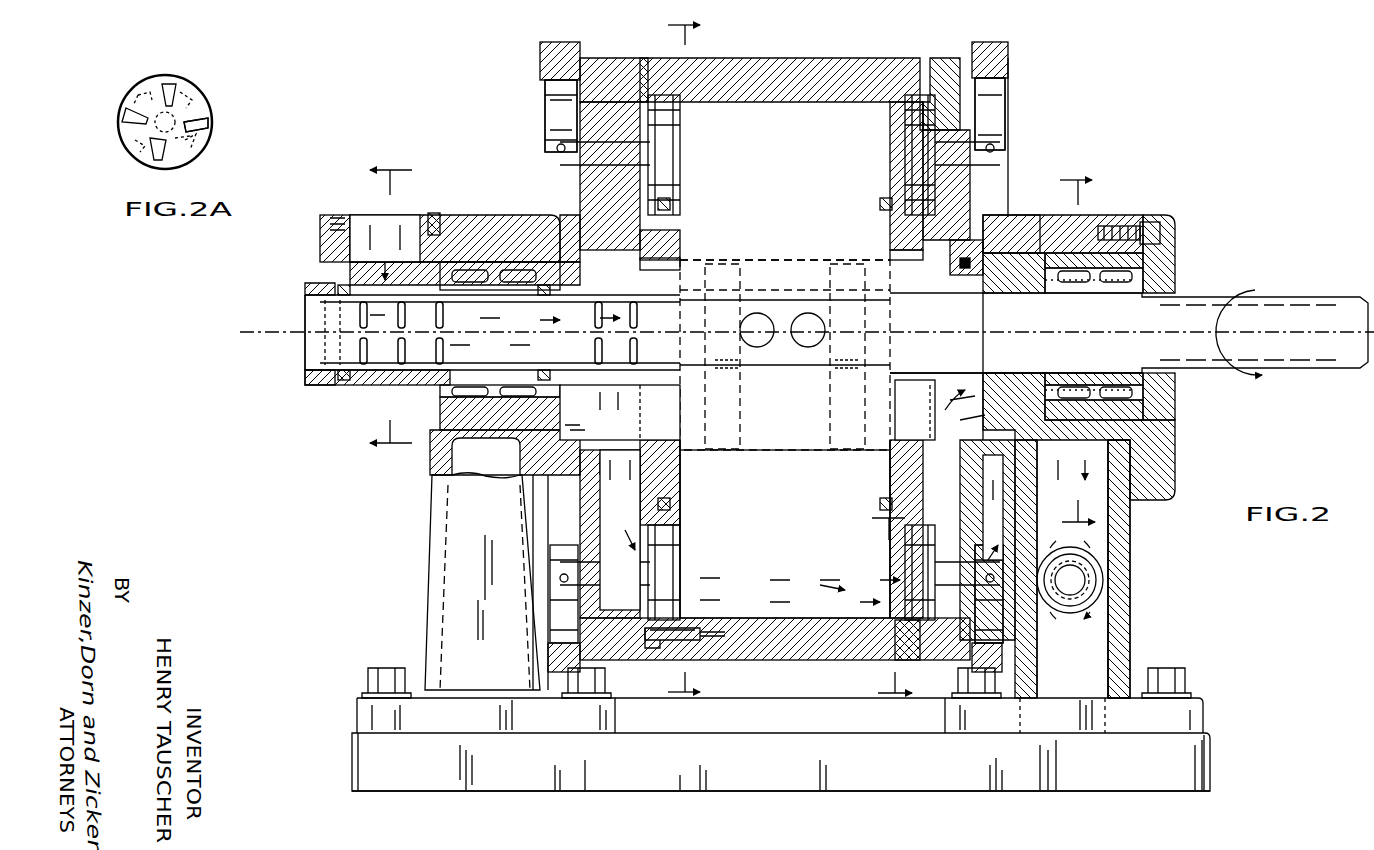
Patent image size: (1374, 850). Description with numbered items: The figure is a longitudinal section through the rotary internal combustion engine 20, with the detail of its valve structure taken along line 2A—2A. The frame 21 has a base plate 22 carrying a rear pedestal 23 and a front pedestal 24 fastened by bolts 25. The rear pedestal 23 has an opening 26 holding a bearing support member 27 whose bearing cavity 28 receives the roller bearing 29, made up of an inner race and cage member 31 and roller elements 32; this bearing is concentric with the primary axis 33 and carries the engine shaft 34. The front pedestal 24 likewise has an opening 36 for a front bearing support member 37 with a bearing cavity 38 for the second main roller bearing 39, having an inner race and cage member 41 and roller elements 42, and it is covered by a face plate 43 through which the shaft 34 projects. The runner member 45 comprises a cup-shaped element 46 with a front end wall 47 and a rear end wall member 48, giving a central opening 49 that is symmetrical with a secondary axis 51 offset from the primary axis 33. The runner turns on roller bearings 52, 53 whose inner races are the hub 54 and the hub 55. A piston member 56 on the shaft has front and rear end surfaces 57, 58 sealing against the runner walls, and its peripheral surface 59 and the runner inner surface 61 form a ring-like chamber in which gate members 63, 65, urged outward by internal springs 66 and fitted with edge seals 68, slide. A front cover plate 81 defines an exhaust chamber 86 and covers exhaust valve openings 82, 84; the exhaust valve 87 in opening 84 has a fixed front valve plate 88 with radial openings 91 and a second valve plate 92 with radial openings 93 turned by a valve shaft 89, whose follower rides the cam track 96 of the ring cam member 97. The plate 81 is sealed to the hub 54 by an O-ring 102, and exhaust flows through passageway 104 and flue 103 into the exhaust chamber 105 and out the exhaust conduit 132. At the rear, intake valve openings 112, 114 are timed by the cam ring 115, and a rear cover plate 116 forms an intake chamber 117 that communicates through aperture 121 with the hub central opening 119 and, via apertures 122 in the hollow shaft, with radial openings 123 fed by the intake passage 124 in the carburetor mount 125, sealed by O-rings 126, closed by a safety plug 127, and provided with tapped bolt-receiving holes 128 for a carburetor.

In FIG. 2, the rotary internal combustion engine 20 is at (1085, 118).
In FIG. 2, the frame 21 is at (845, 805).
In FIG. 2, the base plate 22 is at (945, 770).
In FIG. 2, the rear pedestal 23 is at (460, 575).
In FIG. 2, the front pedestal 24 is at (1095, 215).
In FIG. 2, the bolts 25 is at (378, 678).
In FIG. 2, the horizontally oriented opening 26 is at (482, 215).
In FIG. 2, the bearing support member 27 is at (528, 215).
In FIG. 2, the bearing cavity 28 is at (480, 395).
In FIG. 2, the roller bearing 29 is at (505, 440).
In FIG. 2, the inner race and cage member 31 is at (620, 429).
In FIG. 2, the roller elements 32 is at (520, 395).
In FIG. 2, the primary axis 33 is at (1368, 300).
In FIG. 2, the engine shaft 34 is at (1308, 318).
In FIG. 2, the horizontally oriented opening 36 is at (1045, 265).
In FIG. 2, the front bearing support member 37 is at (1170, 422).
In FIG. 2, the bearing cavity 38 is at (1140, 396).
In FIG. 2, the second main roller bearing 39 is at (1165, 378).
In FIG. 2, the inner race and cage member 41 is at (1165, 282).
In FIG. 2, the roller elements 42 is at (1118, 385).
In FIG. 2, the face plate 43 is at (1165, 255).
In FIG. 2, the runner member 45 is at (800, 75).
In FIG. 2, the cup-shaped element 46 is at (740, 70).
In FIG. 2, the front end wall 47 is at (890, 226).
In FIG. 2, the end wall member 48 is at (690, 50).
In FIG. 2, the central opening 49 is at (752, 612).
In FIG. 2, the secondary axis 51 is at (790, 360).
In FIG. 2, the roller bearing 52 is at (885, 255).
In FIG. 2, the roller bearing 53 is at (690, 258).
In FIG. 2, the hub 54 is at (956, 295).
In FIG. 2, the hub 55 is at (618, 265).
In FIG. 2, the piston member 56 is at (785, 534).
In FIG. 2, the front end surface 57 is at (885, 445).
In FIG. 2, the rear end surface 58 is at (690, 430).
In FIG. 2, the peripheral surface 59 is at (800, 579).
In FIG. 2, the inner surface 61 is at (838, 615).
In FIG. 2, the gate member 63 is at (798, 258).
In FIG. 2, the gate member 65 is at (808, 575).
In FIG. 2, the internal springs 66 is at (740, 368).
In FIG. 2, the edge seals 68 is at (680, 206).
In FIG. 2, the front cover plate 81 is at (940, 65).
In FIG. 2, the exhaust valve opening 82 is at (900, 137).
In FIG. 2, the exhaust valve opening 84 is at (895, 550).
In FIG. 2, the exhaust chamber 86 is at (950, 240).
In FIG. 2A, the exhaust valve 87 is at (205, 78).
In FIG. 2, the exhaust valve 87 is at (890, 580).
In FIG. 2A, the fixed front valve plate 88 is at (145, 150).
In FIG. 2, the fixed front valve plate 88 is at (895, 640).
In FIG. 2A, the valve shaft 89 is at (190, 106).
In FIG. 2, the valve shaft 89 is at (988, 552).
In FIG. 2A, the radially extending openings 91 is at (200, 124).
In FIG. 2, the second valve plate 92 is at (905, 635).
In FIG. 2A, the radial openings 93 is at (192, 140).
In FIG. 2, the cam track 96 is at (1010, 92).
In FIG. 2, the ring cam member 97 is at (1000, 52).
In FIG. 2, the O-ring 102 is at (968, 460).
In FIG. 2, the flue 103 is at (920, 398).
In FIG. 2, the passageway 104 is at (955, 440).
In FIG. 2, the exhaust chamber 105 is at (1115, 515).
In FIG. 2, the intake valve opening 112 is at (690, 145).
In FIG. 2, the intake valve opening 114 is at (688, 540).
In FIG. 2, the cam ring 115 is at (542, 62).
In FIG. 2, the rear cover plate 116 is at (600, 75).
In FIG. 2, the intake chamber 117 is at (620, 530).
In FIG. 2, the central opening 119 is at (589, 418).
In FIG. 2, the aperture 121 is at (630, 455).
In FIG. 2, the apertures 122 is at (590, 358).
In FIG. 2, the radial openings 123 is at (368, 255).
In FIG. 2, the intake passage 124 is at (360, 210).
In FIG. 2, the carburetor mount 125 is at (340, 395).
In FIG. 2, the O-rings 126 is at (335, 288).
In FIG. 2, the safety plug 127 is at (320, 348).
In FIG. 2, the tapped bolt-receiving holes 128 is at (434, 212).
In FIG. 2, the exhaust conduit 132 is at (1105, 578).
In FIG. 2, the section line 2A is at (852, 605).